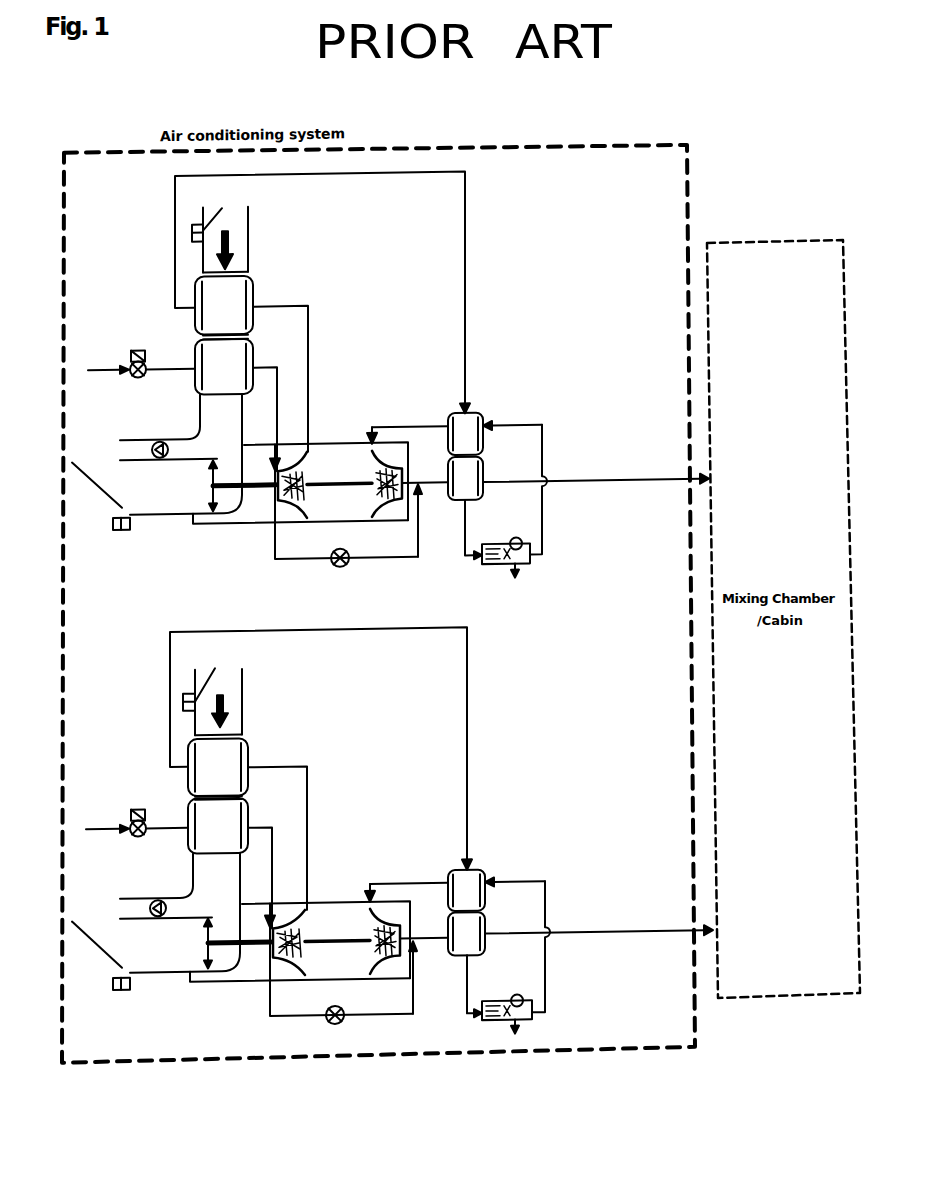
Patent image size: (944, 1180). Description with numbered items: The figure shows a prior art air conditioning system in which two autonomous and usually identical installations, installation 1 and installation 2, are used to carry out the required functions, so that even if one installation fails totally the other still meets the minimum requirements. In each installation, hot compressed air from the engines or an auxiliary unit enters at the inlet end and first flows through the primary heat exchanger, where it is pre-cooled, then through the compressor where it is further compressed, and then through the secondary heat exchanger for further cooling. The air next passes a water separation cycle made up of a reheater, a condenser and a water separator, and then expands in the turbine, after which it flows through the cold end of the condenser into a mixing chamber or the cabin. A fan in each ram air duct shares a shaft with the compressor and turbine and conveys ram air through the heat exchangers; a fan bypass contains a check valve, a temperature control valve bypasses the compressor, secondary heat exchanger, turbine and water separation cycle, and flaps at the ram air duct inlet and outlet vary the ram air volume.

The installation 1 is at (372, 375).
The installation 2 is at (373, 833).